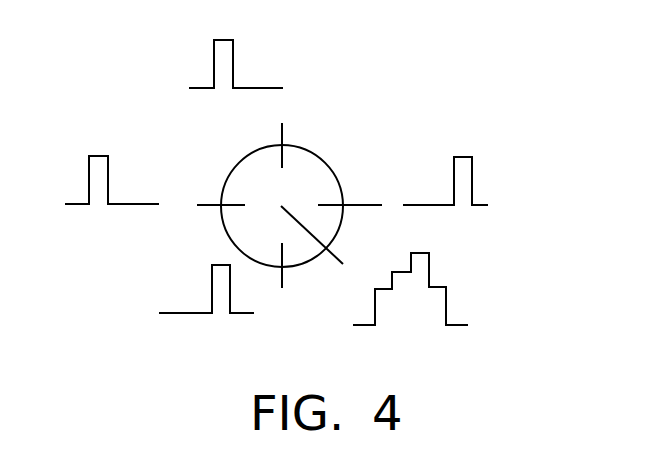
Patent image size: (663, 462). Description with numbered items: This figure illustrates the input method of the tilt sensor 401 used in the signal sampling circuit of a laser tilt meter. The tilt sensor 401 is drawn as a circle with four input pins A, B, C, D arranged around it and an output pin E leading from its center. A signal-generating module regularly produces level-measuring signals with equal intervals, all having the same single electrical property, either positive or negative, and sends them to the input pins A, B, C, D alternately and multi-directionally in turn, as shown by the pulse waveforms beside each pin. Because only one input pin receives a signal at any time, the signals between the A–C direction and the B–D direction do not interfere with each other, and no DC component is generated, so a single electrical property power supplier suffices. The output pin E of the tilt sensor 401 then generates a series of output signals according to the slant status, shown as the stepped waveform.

The tilt sensor 401 is at (312, 168).
The input pin A is at (208, 193).
The input pin B is at (297, 142).
The input pin C is at (359, 189).
The input pin D is at (292, 274).
The output pin E is at (322, 241).